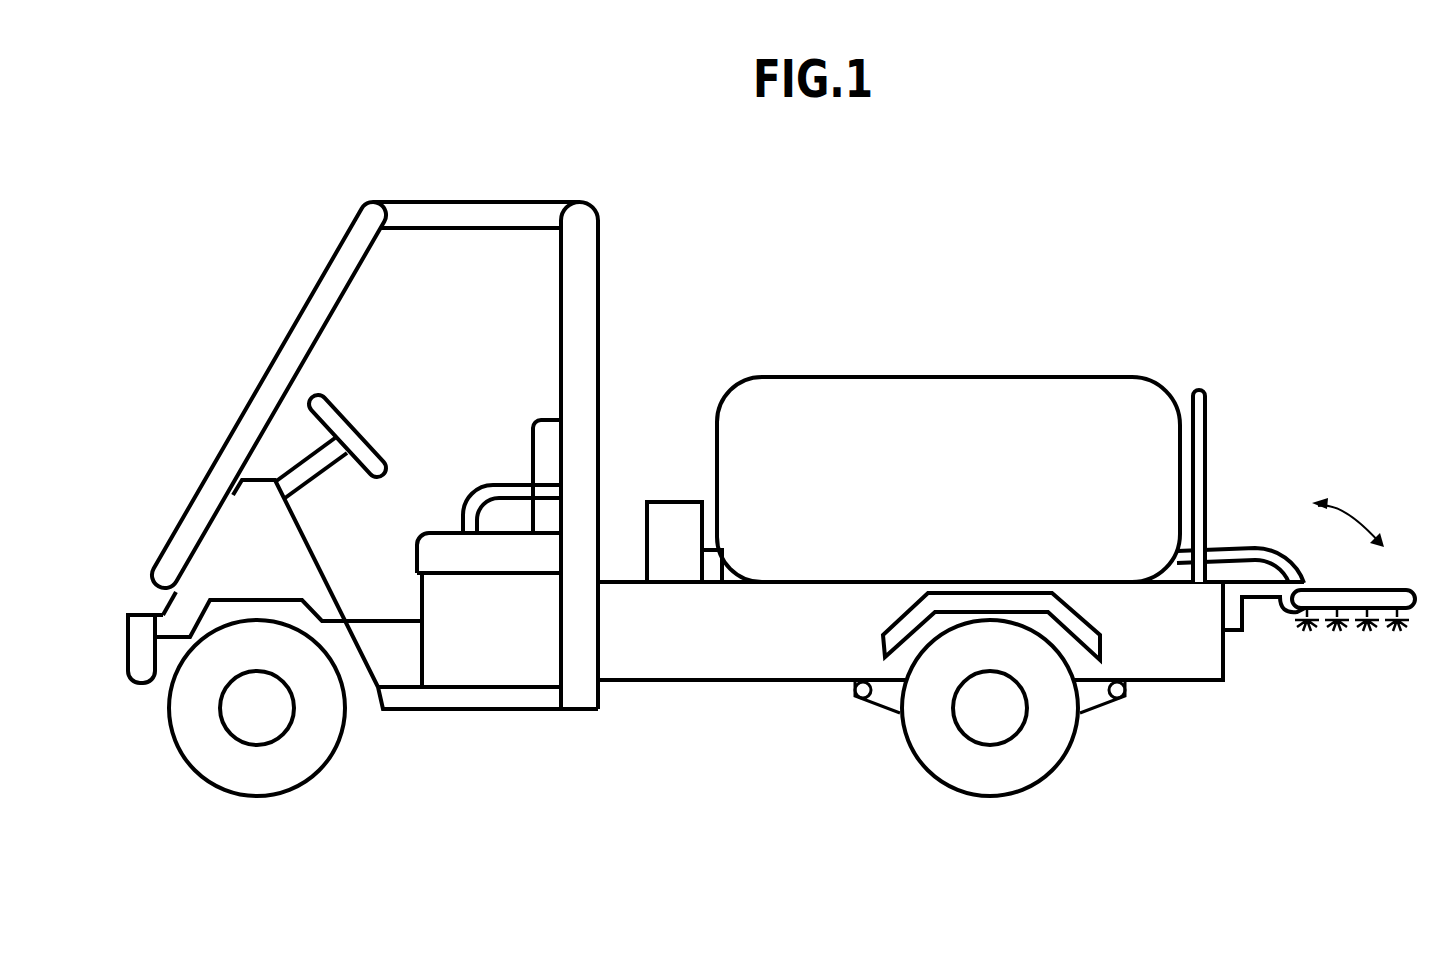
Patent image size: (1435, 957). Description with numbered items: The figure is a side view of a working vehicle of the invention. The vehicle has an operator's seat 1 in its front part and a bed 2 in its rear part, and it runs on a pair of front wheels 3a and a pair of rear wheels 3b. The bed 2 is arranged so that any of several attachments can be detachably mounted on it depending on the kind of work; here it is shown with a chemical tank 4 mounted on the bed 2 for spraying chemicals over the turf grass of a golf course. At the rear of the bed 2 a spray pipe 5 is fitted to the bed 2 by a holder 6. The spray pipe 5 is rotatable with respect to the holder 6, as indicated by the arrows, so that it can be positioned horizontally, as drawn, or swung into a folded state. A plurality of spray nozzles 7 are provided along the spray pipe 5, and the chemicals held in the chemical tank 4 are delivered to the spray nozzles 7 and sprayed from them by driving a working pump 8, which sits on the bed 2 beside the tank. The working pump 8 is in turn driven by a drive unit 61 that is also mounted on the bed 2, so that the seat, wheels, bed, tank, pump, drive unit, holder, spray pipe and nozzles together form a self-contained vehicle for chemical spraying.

The operator's seat 1 is at (543, 287).
The bed 2 is at (722, 658).
The front wheels 3a is at (275, 768).
The rear wheels 3b is at (1002, 772).
The chemical tank 4 is at (967, 408).
The spray pipe 5 is at (1370, 598).
The holder 6 is at (1262, 588).
The spray nozzles 7 is at (1390, 613).
The working pump 8 is at (715, 560).
The drive unit 61 is at (667, 522).